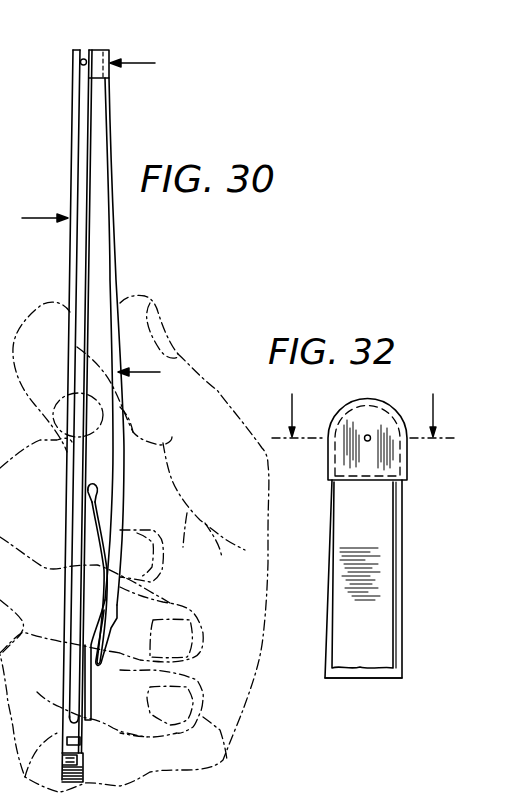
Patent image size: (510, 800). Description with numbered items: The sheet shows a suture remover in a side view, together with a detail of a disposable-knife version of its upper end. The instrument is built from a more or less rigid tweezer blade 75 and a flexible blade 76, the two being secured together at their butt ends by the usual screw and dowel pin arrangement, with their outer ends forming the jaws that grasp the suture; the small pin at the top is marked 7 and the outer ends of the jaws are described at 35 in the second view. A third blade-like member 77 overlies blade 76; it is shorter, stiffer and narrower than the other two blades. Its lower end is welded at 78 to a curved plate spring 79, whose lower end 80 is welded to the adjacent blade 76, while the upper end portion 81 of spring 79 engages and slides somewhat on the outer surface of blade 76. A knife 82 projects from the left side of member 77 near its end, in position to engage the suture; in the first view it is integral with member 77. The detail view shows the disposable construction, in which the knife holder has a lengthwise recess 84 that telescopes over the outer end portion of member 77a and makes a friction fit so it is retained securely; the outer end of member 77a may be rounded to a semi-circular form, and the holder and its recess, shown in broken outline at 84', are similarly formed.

In FIG. 30, the pivot pin 7 is at (84, 58).
In FIG. 30, the knife 82 is at (97, 52).
In FIG. 30, the tweezer blade 75 is at (73, 166).
In FIG. 30, the flexible blade 76 is at (90, 227).
In FIG. 32, the flexible blade 76 is at (322, 658).
In FIG. 30, the blade-like member 77 is at (118, 472).
In FIG. 32, the member 77a is at (385, 616).
In FIG. 30, the weld 78 is at (111, 642).
In FIG. 30, the curved plate spring 79 is at (103, 580).
In FIG. 30, the lower end of plate spring 80 is at (88, 698).
In FIG. 30, the upper end portion of spring 81 is at (90, 499).
In FIG. 32, the section line 35 is at (364, 406).
In FIG. 32, the lengthwise recess 84 is at (366, 405).
In FIG. 32, the inner outline 84' is at (393, 451).